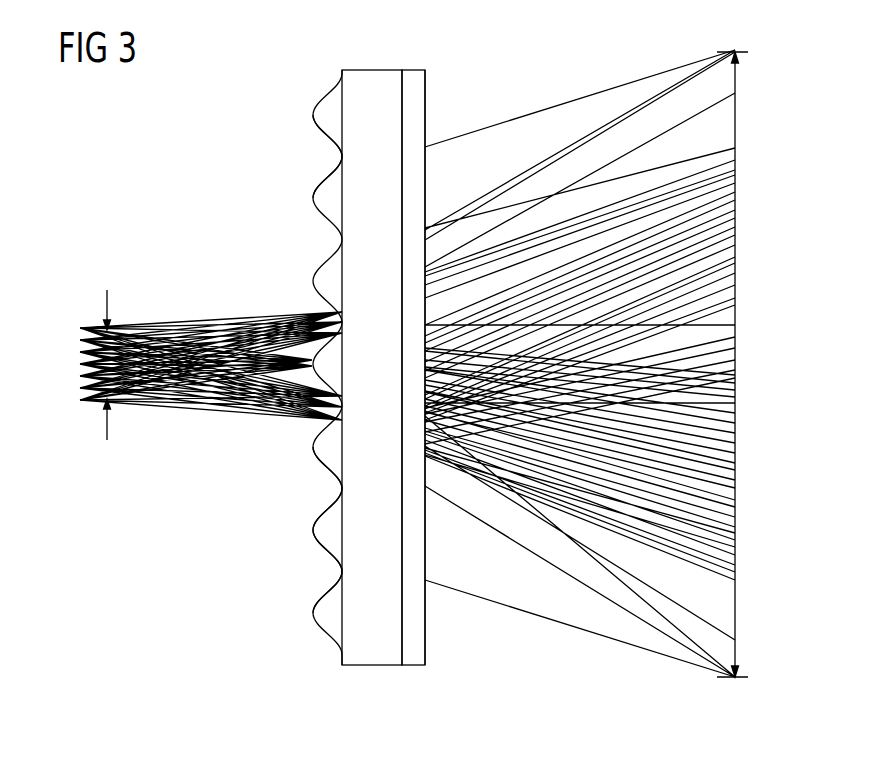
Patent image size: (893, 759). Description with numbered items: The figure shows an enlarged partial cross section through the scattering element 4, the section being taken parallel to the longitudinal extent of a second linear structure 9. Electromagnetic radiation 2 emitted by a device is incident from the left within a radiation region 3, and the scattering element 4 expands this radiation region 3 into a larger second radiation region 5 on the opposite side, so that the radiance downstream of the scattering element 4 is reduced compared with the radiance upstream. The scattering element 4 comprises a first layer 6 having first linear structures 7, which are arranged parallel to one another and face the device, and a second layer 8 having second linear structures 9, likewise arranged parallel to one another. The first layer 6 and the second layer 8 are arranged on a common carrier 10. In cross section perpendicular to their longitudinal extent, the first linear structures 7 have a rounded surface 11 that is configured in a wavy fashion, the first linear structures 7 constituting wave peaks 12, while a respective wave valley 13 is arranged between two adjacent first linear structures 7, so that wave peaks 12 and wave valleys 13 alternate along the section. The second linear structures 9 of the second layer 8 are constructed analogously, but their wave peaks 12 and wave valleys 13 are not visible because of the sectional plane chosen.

The electromagnetic radiation 2 is at (164, 345).
The radiation region 3 is at (82, 357).
The scattering element 4 is at (364, 332).
The second radiation region 5 is at (696, 376).
The first layer 6 is at (291, 342).
The first linear structures 7 is at (320, 117).
The second layer 8 is at (437, 102).
The second linear structures 9 is at (417, 70).
The common carrier 10 is at (378, 78).
The rounded surface 11 is at (340, 160).
The wave peaks 12 is at (311, 522).
The wave valleys 13 is at (342, 492).